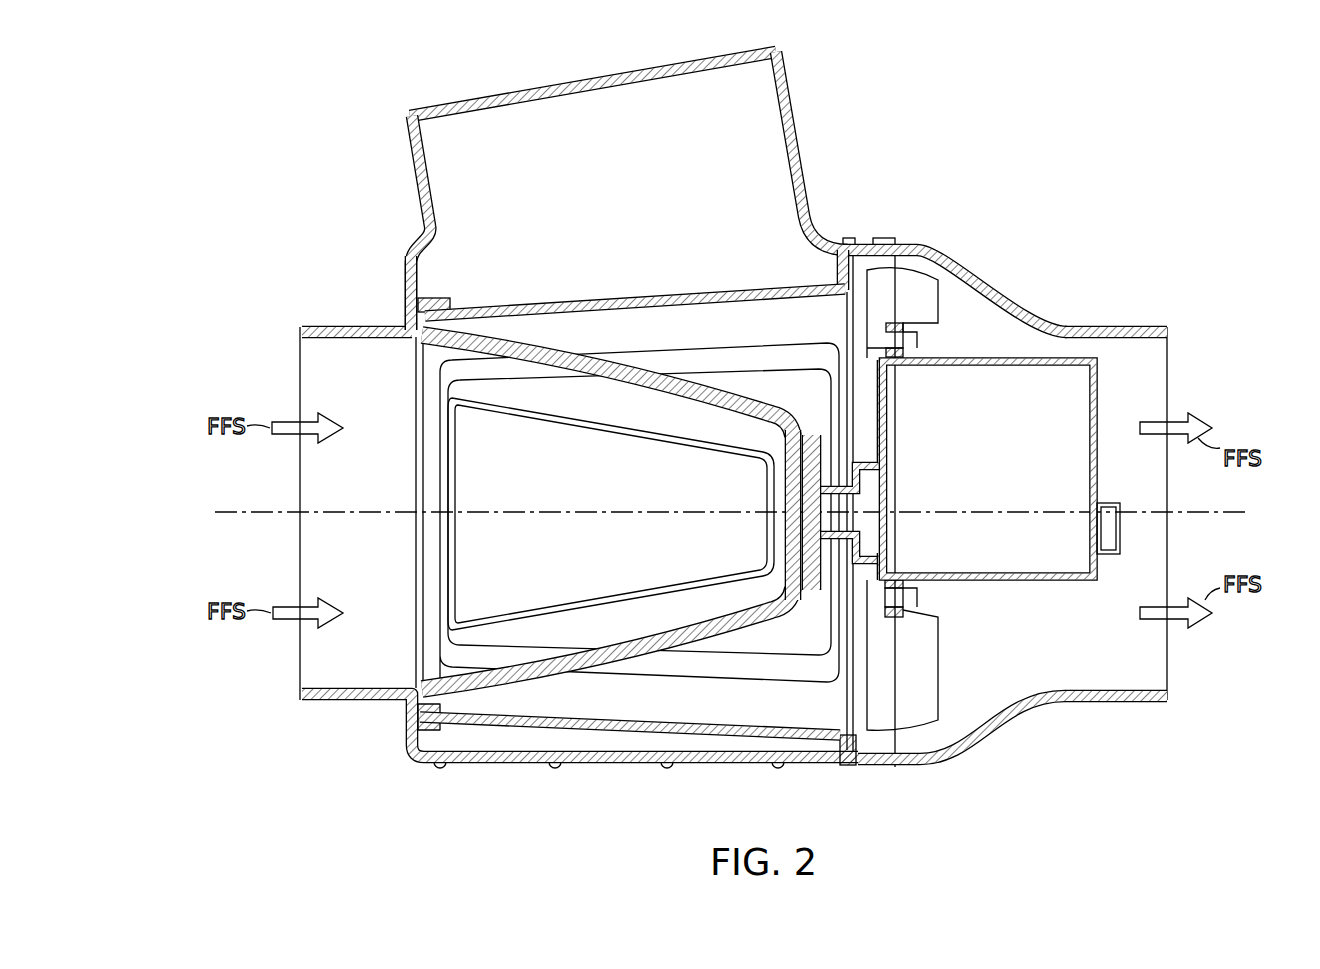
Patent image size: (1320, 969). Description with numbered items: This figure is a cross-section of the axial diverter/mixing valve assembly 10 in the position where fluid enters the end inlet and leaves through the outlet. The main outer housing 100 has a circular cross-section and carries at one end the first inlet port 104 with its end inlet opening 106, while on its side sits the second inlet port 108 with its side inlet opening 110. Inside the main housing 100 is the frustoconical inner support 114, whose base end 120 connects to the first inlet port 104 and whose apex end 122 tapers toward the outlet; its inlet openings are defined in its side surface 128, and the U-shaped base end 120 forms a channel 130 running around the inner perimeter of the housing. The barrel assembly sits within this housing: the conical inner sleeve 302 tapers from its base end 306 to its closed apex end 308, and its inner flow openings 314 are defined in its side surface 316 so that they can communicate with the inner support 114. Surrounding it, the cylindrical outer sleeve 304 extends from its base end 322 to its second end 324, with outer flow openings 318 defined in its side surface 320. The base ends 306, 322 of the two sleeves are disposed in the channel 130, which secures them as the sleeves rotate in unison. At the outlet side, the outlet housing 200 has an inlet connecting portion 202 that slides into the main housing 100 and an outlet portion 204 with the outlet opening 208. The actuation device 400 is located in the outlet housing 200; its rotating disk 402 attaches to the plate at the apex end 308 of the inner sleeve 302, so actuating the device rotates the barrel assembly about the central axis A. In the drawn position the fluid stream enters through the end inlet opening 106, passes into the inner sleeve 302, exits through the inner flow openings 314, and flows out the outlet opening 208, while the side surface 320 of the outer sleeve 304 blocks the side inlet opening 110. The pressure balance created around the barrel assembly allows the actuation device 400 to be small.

The valve assembly 10 is at (299, 83).
The second (side) inlet opening 110 is at (605, 98).
The second inlet (side inlet) port 108 is at (418, 177).
The first (base) end of outer sleeve 322 is at (408, 266).
The first end (base) of inner sleeve 306 is at (412, 300).
The side surface of inner sleeve 316 is at (493, 345).
The inner flow openings 314 is at (573, 413).
The side surface of outer sleeve 320 is at (612, 297).
The outer flow openings 318 is at (700, 380).
The inner sleeve 302 is at (760, 393).
The outer sleeve 304 is at (793, 291).
The inlet connecting portion 202 is at (967, 265).
The outlet housing 200 is at (1027, 312).
The outlet portion 204 is at (1147, 330).
The outlet opening 208 is at (1170, 366).
The first (end) inlet opening 106 is at (303, 385).
The first inlet (end inlet) port 104 is at (345, 338).
The second (apex) end of inner sleeve 308 is at (782, 430).
The rotating disk 402 is at (797, 548).
The actuation device 400 is at (1004, 582).
The first end (base) of inner support 120 is at (430, 683).
The channel 130 is at (410, 718).
The inner sleeve/support 114 is at (470, 700).
The main outer housing 100 is at (567, 763).
The side surface of inner support 128 is at (600, 668).
The second (apex) end of inner support 122 is at (767, 620).
The second end of outer sleeve 324 is at (845, 766).
The central axis A is at (553, 514).